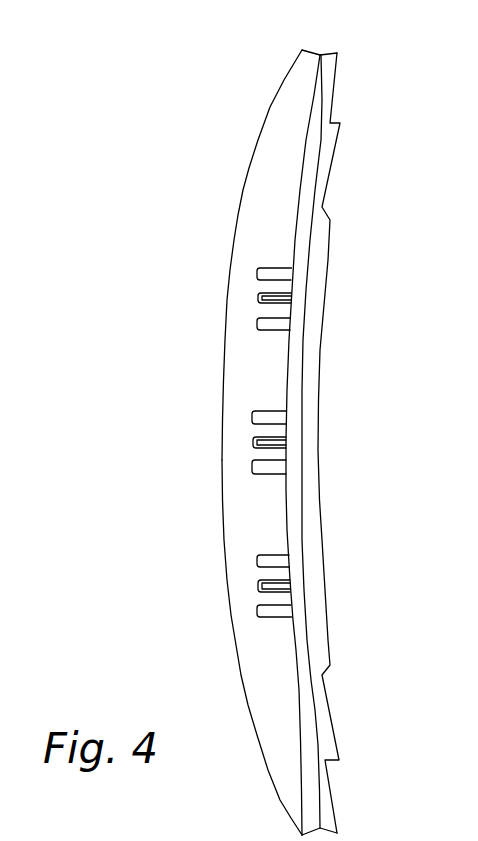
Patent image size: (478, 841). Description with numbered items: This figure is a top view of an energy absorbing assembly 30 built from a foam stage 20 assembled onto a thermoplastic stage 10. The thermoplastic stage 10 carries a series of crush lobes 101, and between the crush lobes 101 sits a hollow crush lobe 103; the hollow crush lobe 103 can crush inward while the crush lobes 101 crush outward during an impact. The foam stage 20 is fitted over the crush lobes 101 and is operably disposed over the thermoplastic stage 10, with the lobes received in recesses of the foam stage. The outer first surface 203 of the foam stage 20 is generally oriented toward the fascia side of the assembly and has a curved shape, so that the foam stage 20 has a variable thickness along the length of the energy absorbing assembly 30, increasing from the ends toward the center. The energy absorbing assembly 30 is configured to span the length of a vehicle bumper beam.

The thermoplastic stage 10 is at (302, 456).
The foam stage 20 is at (225, 355).
The energy absorbing assembly 30 is at (357, 299).
The crush lobe 101 is at (266, 268).
The hollow crush lobe 103 is at (258, 298).
The first surface 203 is at (225, 523).